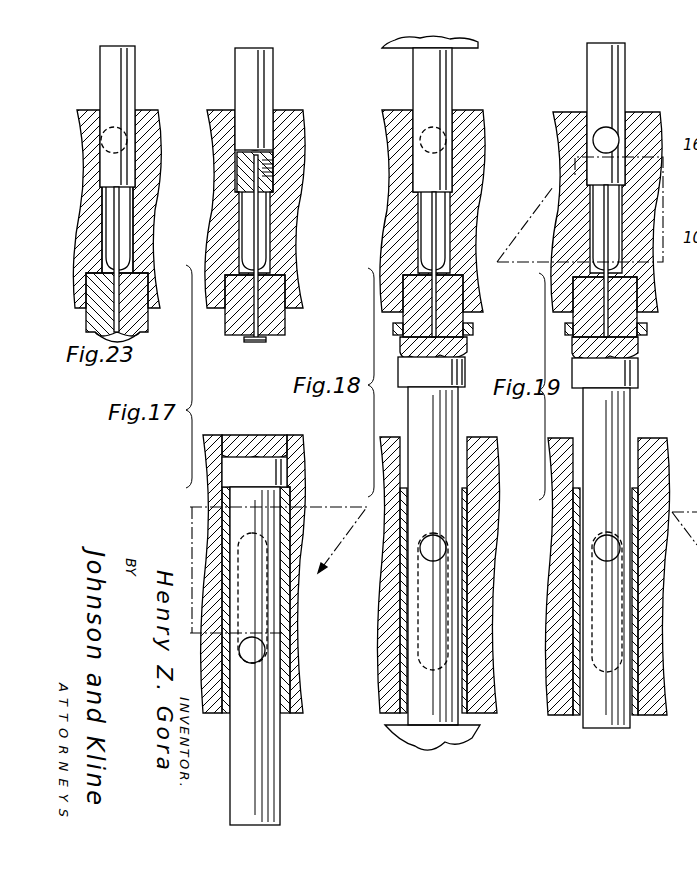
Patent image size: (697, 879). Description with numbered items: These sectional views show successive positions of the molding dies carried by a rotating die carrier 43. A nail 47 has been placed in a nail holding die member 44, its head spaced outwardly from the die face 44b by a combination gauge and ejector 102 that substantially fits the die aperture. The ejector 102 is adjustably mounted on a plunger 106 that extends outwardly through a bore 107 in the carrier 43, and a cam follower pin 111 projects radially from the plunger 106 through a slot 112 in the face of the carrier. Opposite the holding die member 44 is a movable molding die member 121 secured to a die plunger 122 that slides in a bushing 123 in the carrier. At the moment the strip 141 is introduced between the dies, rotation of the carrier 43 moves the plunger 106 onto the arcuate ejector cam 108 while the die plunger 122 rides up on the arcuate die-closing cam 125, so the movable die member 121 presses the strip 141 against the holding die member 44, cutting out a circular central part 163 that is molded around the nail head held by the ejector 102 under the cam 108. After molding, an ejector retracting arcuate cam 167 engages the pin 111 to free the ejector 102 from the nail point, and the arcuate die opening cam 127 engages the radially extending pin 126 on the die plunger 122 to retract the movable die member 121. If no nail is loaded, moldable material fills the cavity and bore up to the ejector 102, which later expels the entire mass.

In FIG. 23, the die carrier 43 is at (89, 111).
In FIG. 17, the die carrier 43 is at (220, 110).
In FIG. 18, the die carrier 43 is at (394, 110).
In FIG. 19, the die carrier 43 is at (572, 112).
In FIG. 23, the nail holding die member 44 is at (88, 323).
In FIG. 17, the nail holding die member 44 is at (227, 322).
In FIG. 18, the nail holding die member 44 is at (448, 308).
In FIG. 19, the nail holding die member 44 is at (628, 292).
In FIG. 17, the die face 44b is at (270, 338).
In FIG. 17, the nail 47 is at (258, 321).
In FIG. 18, the nail 47 is at (432, 318).
In FIG. 19, the nail 47 is at (606, 318).
In FIG. 23, the combination gauge and ejector 102 is at (118, 230).
In FIG. 17, the combination gauge and ejector 102 is at (256, 203).
In FIG. 18, the combination gauge and ejector 102 is at (433, 217).
In FIG. 19, the combination gauge and ejector 102 is at (608, 222).
In FIG. 23, the plunger 106 is at (125, 75).
In FIG. 17, the plunger 106 is at (266, 67).
In FIG. 18, the plunger 106 is at (446, 75).
In FIG. 19, the plunger 106 is at (619, 57).
In FIG. 23, the bore 107 is at (130, 263).
In FIG. 17, the bore 107 is at (267, 259).
In FIG. 18, the bore 107 is at (433, 231).
In FIG. 19, the bore 107 is at (606, 227).
In FIG. 18, the arcuate ejector cam 108 is at (478, 48).
In FIG. 23, the cam follower pin 111 is at (122, 128).
In FIG. 17, the cam follower pin 111 is at (262, 121).
In FIG. 18, the cam follower pin 111 is at (422, 153).
In FIG. 19, the cam follower pin 111 is at (613, 122).
In FIG. 23, the slot 112 is at (128, 215).
In FIG. 17, the movable molding die member 121 is at (287, 448).
In FIG. 18, the movable molding die member 121 is at (467, 369).
In FIG. 19, the movable molding die member 121 is at (640, 358).
In FIG. 17, the die plunger 122 is at (267, 760).
In FIG. 18, the die plunger 122 is at (447, 420).
In FIG. 19, the die plunger 122 is at (618, 420).
In FIG. 17, the bushing 123 is at (283, 714).
In FIG. 18, the bushing 123 is at (462, 533).
In FIG. 19, the bushing 123 is at (632, 717).
In FIG. 18, the arcuate die-closing cam 125 is at (412, 742).
In FIG. 17, the radially extending pin 126 is at (255, 668).
In FIG. 18, the radially extending pin 126 is at (437, 572).
In FIG. 19, the radially extending pin 126 is at (610, 572).
In FIG. 17, the arcuate die opening cam 127 is at (322, 578).
In FIG. 19, the arcuate die opening cam 127 is at (684, 554).
In FIG. 18, the strip 141 is at (474, 327).
In FIG. 19, the strip 141 is at (648, 330).
In FIG. 18, the circular central part 163 is at (470, 350).
In FIG. 19, the ejector retracting arcuate cam 167 is at (548, 194).